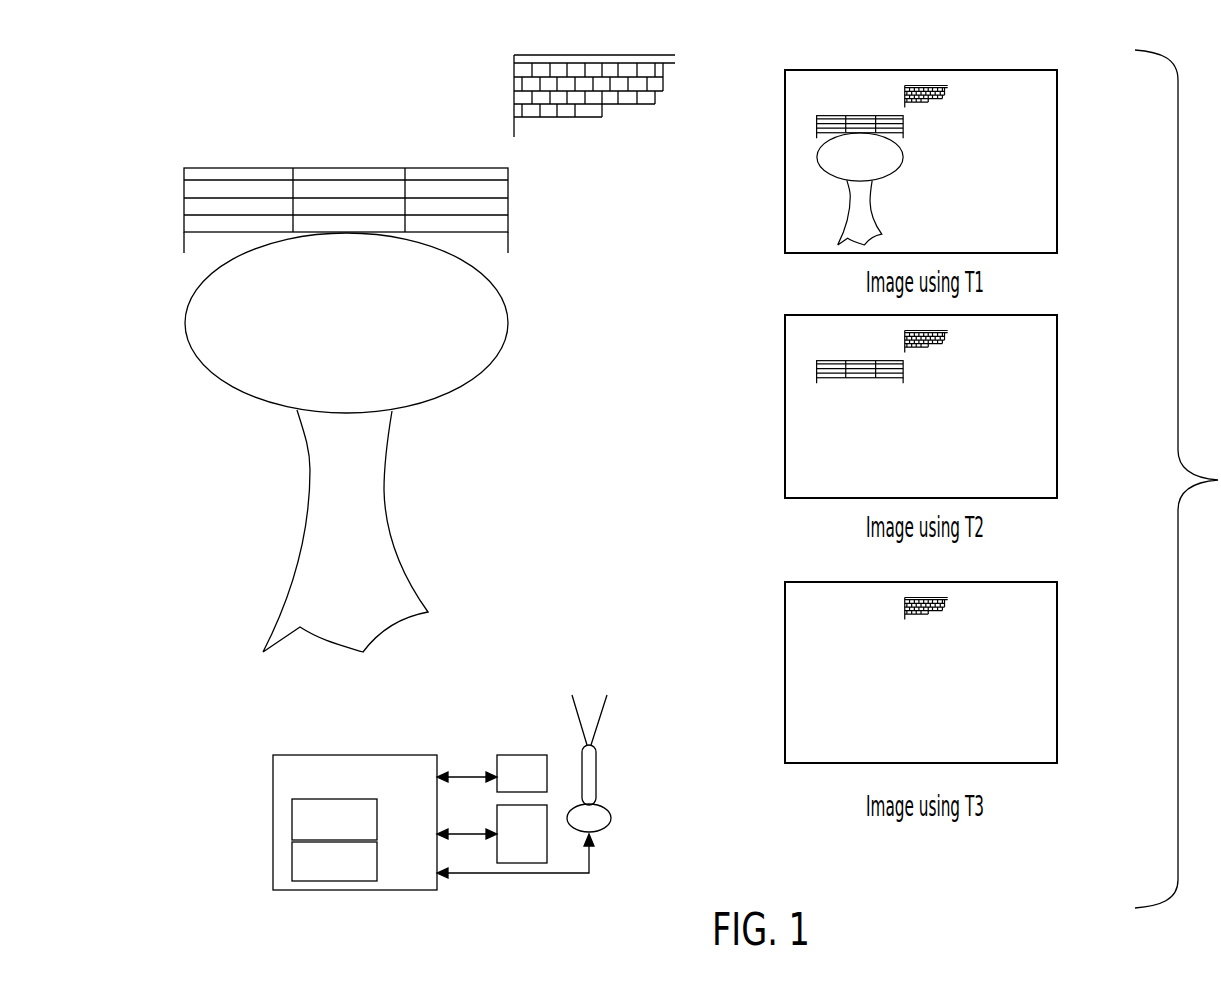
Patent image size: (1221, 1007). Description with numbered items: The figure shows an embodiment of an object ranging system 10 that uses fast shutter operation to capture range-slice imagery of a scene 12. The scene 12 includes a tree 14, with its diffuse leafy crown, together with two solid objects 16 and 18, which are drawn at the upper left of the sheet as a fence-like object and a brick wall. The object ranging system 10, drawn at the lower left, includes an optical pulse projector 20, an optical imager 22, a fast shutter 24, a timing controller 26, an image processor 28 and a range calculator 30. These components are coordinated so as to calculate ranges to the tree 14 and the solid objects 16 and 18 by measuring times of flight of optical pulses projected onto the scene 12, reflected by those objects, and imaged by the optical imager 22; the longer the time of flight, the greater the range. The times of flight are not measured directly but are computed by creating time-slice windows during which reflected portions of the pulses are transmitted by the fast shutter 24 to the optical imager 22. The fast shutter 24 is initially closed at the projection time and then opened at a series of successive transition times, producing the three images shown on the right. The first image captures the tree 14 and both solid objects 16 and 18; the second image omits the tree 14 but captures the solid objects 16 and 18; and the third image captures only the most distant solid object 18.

The object ranging system 10 is at (458, 718).
The scene 12 is at (346, 442).
The tree 14 is at (242, 396).
The solid object 16 is at (372, 168).
The solid object 18 is at (568, 117).
The optical pulse projector 20 is at (598, 777).
The optical imager 22 is at (520, 863).
The fast shutter 24 is at (525, 755).
The timing controller 26 is at (334, 786).
The image processor 28 is at (292, 820).
The range calculator 30 is at (292, 863).